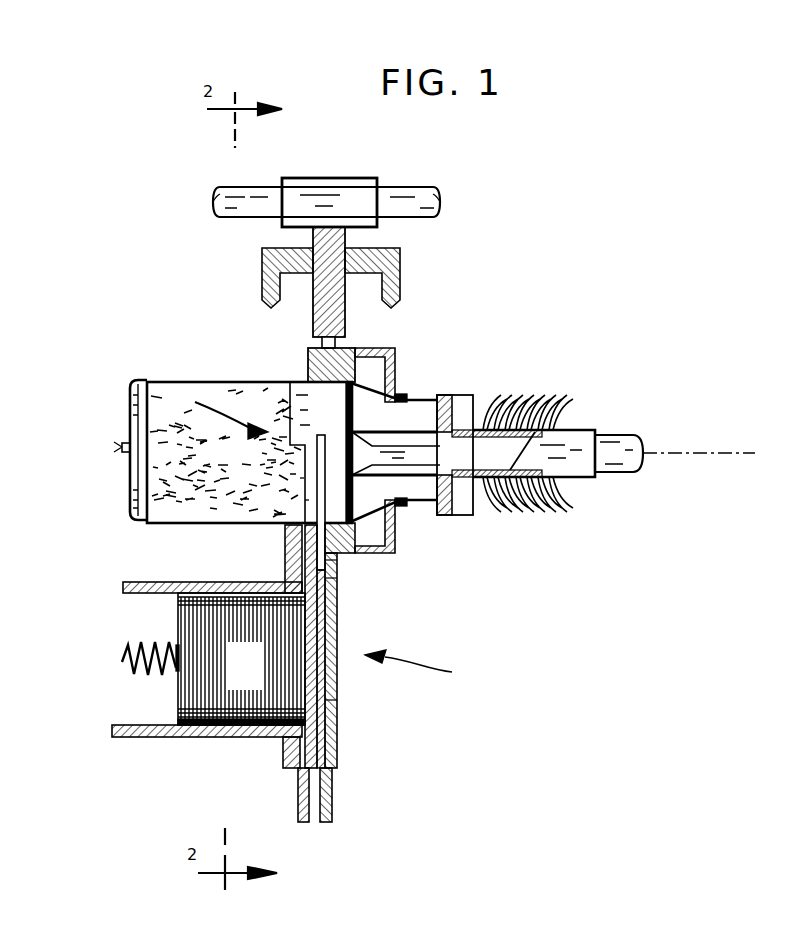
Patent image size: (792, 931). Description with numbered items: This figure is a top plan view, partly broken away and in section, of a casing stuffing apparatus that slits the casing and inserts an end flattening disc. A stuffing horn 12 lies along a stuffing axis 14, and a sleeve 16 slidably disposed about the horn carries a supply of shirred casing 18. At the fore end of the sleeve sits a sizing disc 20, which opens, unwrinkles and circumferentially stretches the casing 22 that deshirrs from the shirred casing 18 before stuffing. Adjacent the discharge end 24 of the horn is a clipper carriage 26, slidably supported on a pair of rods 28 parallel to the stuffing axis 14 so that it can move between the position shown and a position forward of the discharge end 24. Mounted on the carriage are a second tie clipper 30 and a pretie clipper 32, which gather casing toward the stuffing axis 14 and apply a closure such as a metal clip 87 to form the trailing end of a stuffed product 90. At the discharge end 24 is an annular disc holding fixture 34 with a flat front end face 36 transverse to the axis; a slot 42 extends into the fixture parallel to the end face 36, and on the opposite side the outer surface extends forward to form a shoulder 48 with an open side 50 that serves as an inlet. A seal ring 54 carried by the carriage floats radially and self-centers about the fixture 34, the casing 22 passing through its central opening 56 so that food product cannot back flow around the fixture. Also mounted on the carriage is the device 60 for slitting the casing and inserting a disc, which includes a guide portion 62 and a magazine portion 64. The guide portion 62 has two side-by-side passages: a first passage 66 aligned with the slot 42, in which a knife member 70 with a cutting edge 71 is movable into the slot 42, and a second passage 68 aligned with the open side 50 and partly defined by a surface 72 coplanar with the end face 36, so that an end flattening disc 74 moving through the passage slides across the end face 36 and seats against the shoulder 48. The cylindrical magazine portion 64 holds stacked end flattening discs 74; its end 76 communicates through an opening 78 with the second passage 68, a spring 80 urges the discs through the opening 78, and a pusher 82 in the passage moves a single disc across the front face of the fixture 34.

The stuffing horn 12 is at (620, 435).
The stuffing axis 14 is at (695, 473).
The sleeve 16 is at (578, 428).
The shirred casing 18 is at (515, 395).
The sizing disc 20 is at (445, 395).
The casing 22 is at (415, 398).
The discharge end 24 is at (355, 440).
The clipper carriage 26 is at (346, 320).
The rods 28 is at (422, 187).
The second tie clipper 30 is at (262, 265).
The pretie clipper 32 is at (400, 258).
The disc holding fixture 34 is at (225, 452).
The front end face 36 is at (300, 478).
The slot 42 is at (305, 500).
The shoulder 48 is at (292, 399).
The open side 50 is at (298, 453).
The seal ring 54 is at (320, 342).
The central opening 56 is at (308, 365).
The device for slitting the casing and inserting an end flattening disc 60 is at (425, 668).
The guide portion 62 is at (337, 730).
The magazine portion 64 is at (130, 737).
The first passage 66 is at (332, 568).
The second passage 68 is at (285, 565).
The knife member 70 is at (332, 790).
The cutting edge 71 is at (330, 578).
The surface 72 is at (285, 535).
The end flattening disc 74 is at (150, 390).
The magazine end 76 is at (278, 742).
The opening 78 is at (337, 700).
The spring 80 is at (138, 640).
The pusher 82 is at (298, 800).
The metal clip 87 is at (115, 447).
The stuffed product 90 is at (160, 505).